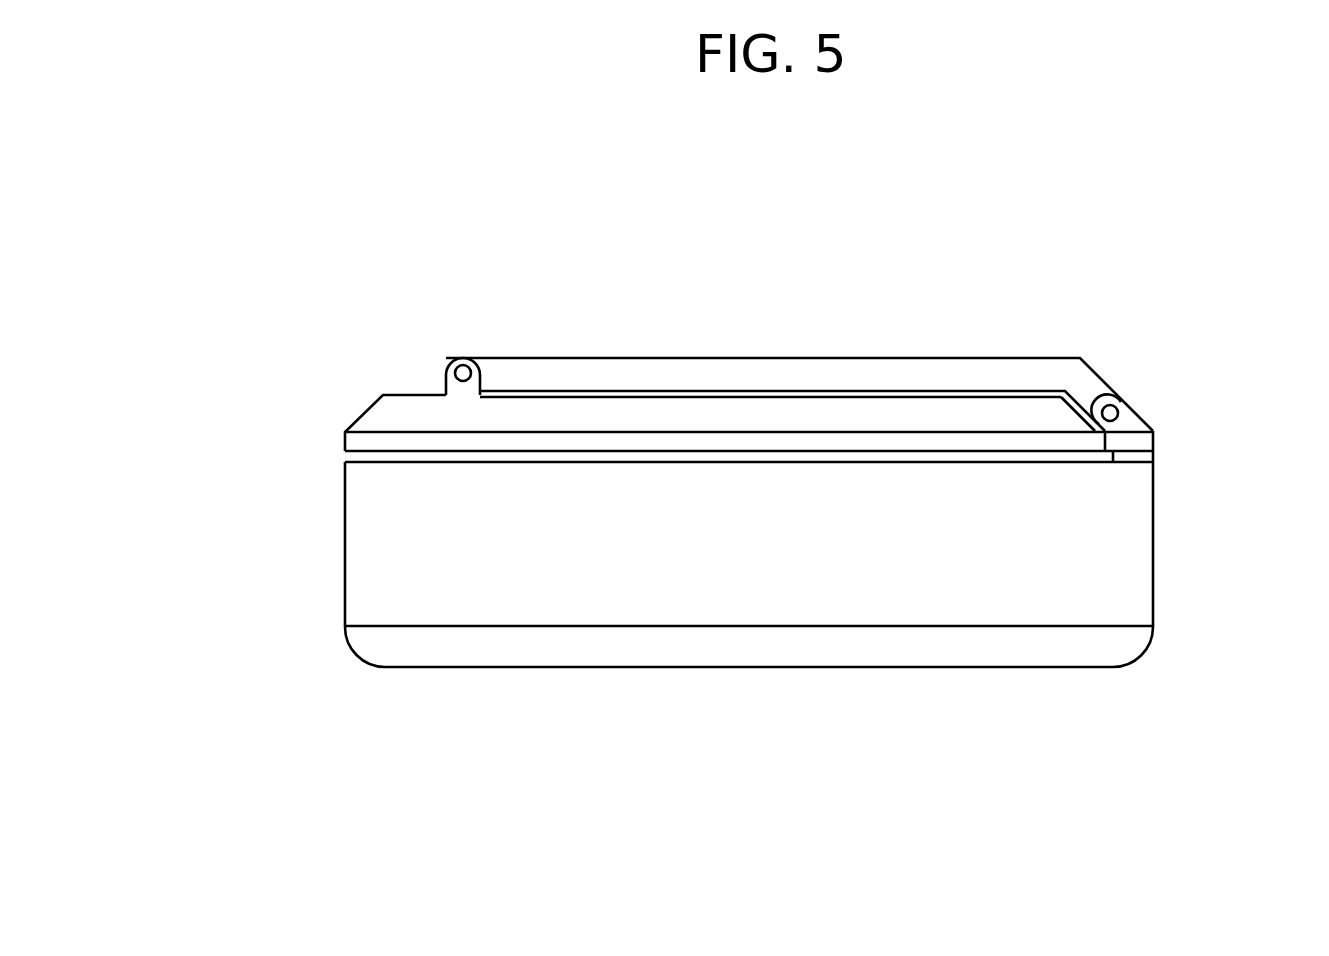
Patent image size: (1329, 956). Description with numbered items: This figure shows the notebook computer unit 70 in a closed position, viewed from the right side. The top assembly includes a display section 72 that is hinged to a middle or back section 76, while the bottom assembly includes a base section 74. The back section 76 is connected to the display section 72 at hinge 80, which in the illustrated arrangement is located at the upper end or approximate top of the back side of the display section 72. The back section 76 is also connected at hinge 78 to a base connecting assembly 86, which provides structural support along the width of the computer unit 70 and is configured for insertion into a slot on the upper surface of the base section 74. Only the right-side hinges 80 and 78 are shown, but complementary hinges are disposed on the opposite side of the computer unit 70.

The computer unit 70 is at (940, 206).
The display section 72 is at (362, 415).
The base section 74 is at (868, 607).
The middle or back section 76 is at (662, 358).
The hinge 78 is at (1128, 413).
The hinge 80 is at (453, 362).
The base connecting assembly 86 is at (1180, 469).